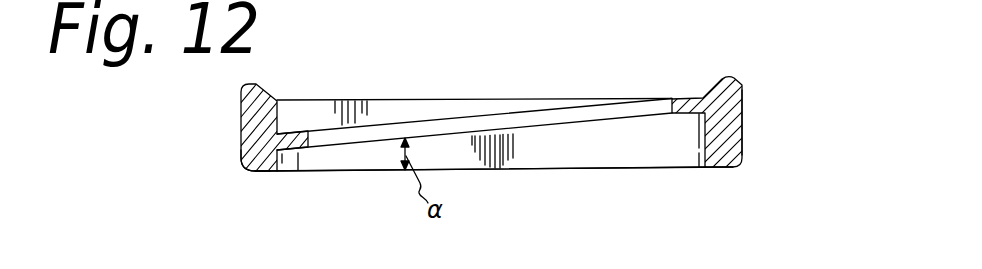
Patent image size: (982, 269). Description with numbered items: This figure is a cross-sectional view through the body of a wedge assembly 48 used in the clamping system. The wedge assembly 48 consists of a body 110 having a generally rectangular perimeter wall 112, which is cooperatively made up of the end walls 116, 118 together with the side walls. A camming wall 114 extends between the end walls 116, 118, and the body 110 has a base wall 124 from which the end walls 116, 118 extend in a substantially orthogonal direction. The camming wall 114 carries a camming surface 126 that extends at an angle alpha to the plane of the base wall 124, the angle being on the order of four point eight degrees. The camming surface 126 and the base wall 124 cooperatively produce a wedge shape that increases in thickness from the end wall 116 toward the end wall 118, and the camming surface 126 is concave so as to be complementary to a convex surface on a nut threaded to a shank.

The wedge assembly 48 is at (743, 140).
The body 110 is at (677, 150).
The perimeter wall 112 is at (242, 160).
The camming wall 114 is at (517, 120).
The end wall 116 is at (240, 139).
The end wall 118 is at (743, 115).
The base wall 124 is at (355, 172).
The camming surface 126 is at (425, 120).